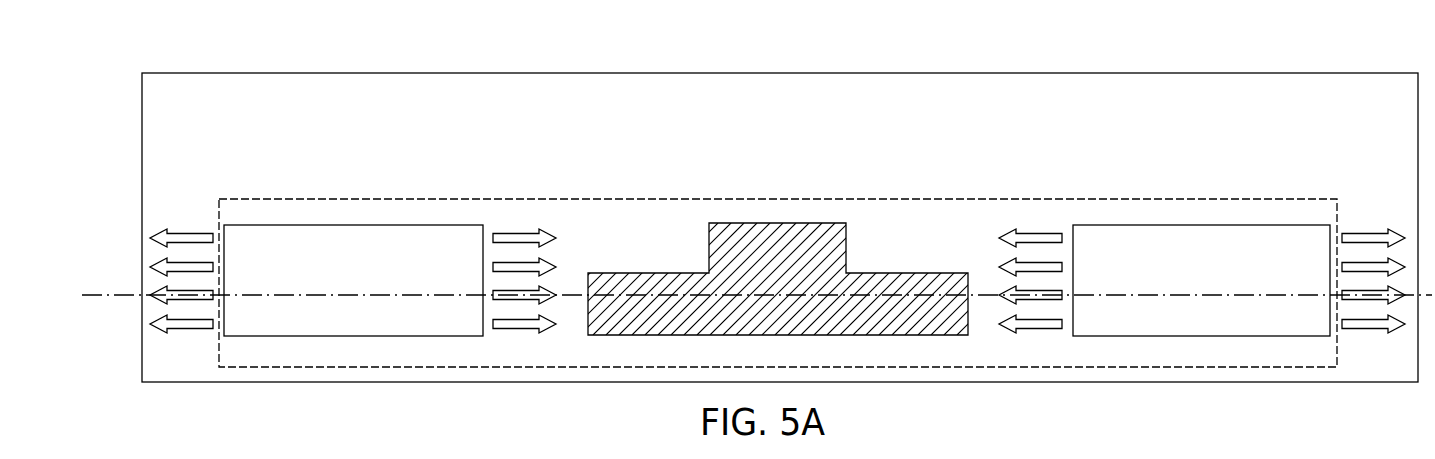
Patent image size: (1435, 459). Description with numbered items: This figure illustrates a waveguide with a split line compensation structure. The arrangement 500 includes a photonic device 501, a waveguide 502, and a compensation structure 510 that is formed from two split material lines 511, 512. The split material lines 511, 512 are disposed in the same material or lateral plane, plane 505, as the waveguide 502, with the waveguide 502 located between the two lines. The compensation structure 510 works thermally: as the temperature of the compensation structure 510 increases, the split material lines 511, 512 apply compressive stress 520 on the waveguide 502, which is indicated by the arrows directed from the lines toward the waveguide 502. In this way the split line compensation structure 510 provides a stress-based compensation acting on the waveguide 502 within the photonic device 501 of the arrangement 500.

The arrangement 500 is at (1278, 56).
The photonic device 501 is at (1364, 113).
The waveguide 502 is at (789, 266).
The plane 505 is at (109, 293).
The compensation structure 510 is at (1143, 199).
The split material line 511 is at (372, 266).
The split material line 512 is at (1217, 266).
The compressive stress 520 is at (777, 281).